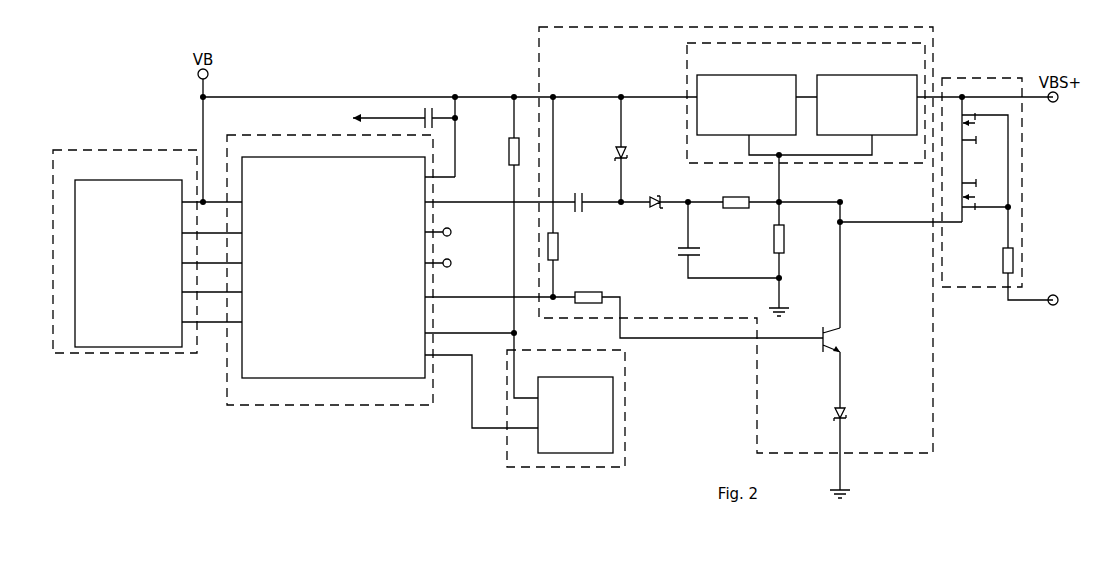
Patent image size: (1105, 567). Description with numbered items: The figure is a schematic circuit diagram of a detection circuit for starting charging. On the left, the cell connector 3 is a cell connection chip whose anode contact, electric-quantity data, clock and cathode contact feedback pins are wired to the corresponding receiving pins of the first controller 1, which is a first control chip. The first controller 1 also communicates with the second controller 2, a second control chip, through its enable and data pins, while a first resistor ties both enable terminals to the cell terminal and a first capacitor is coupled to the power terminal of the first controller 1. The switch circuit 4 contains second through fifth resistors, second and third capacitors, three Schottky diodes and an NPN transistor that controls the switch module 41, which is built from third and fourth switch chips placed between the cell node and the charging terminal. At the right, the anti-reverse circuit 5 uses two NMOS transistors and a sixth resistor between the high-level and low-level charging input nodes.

The first controller 1 is at (318, 397).
The second controller 2 is at (563, 458).
The cell connector 3 is at (115, 155).
The switch circuit 4 is at (743, 250).
The switch module 41 is at (915, 65).
The anti-reverse circuit 5 is at (1017, 185).